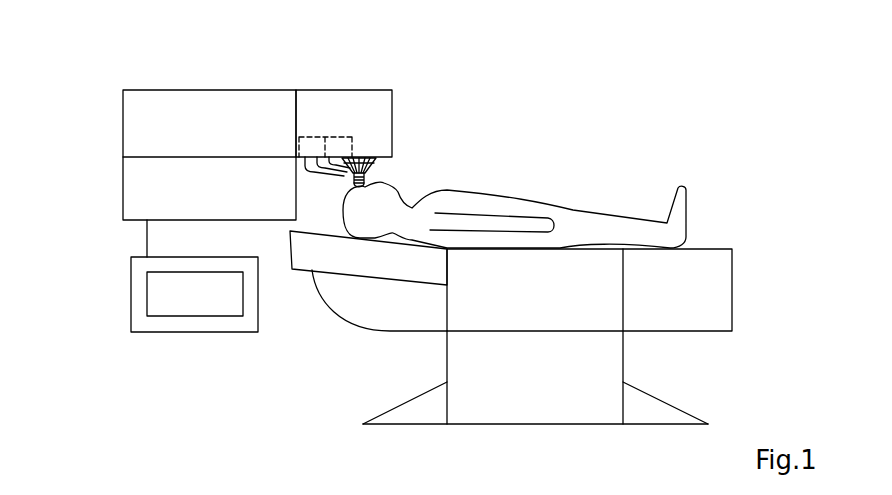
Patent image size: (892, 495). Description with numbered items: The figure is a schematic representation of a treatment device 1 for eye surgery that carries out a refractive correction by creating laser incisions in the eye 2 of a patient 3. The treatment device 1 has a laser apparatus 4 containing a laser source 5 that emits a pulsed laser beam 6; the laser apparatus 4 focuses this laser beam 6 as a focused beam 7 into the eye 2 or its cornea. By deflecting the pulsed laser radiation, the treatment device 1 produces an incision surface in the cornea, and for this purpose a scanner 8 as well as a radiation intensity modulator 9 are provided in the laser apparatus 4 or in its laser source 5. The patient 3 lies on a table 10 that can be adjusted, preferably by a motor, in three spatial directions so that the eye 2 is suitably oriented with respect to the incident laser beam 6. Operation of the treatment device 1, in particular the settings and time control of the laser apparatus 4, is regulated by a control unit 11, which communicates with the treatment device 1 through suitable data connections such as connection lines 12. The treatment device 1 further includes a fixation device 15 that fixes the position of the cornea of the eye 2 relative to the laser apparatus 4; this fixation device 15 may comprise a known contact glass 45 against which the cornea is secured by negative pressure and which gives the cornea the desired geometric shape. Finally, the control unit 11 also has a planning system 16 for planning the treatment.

The treatment device 1 is at (630, 99).
The eye 2 is at (359, 190).
The patient 3 is at (680, 218).
The laser apparatus 4 is at (148, 100).
The laser source 5 is at (335, 97).
The laser beam 6 is at (382, 163).
The focused beam 7 is at (368, 175).
The scanner 8 is at (352, 150).
The radiation intensity modulator 9 is at (313, 137).
The table 10 is at (727, 270).
The control unit 11 is at (172, 328).
The connection lines 12 is at (146, 237).
The fixation device 15 is at (334, 178).
The planning system 16 is at (155, 302).
The contact glass 45 is at (363, 183).